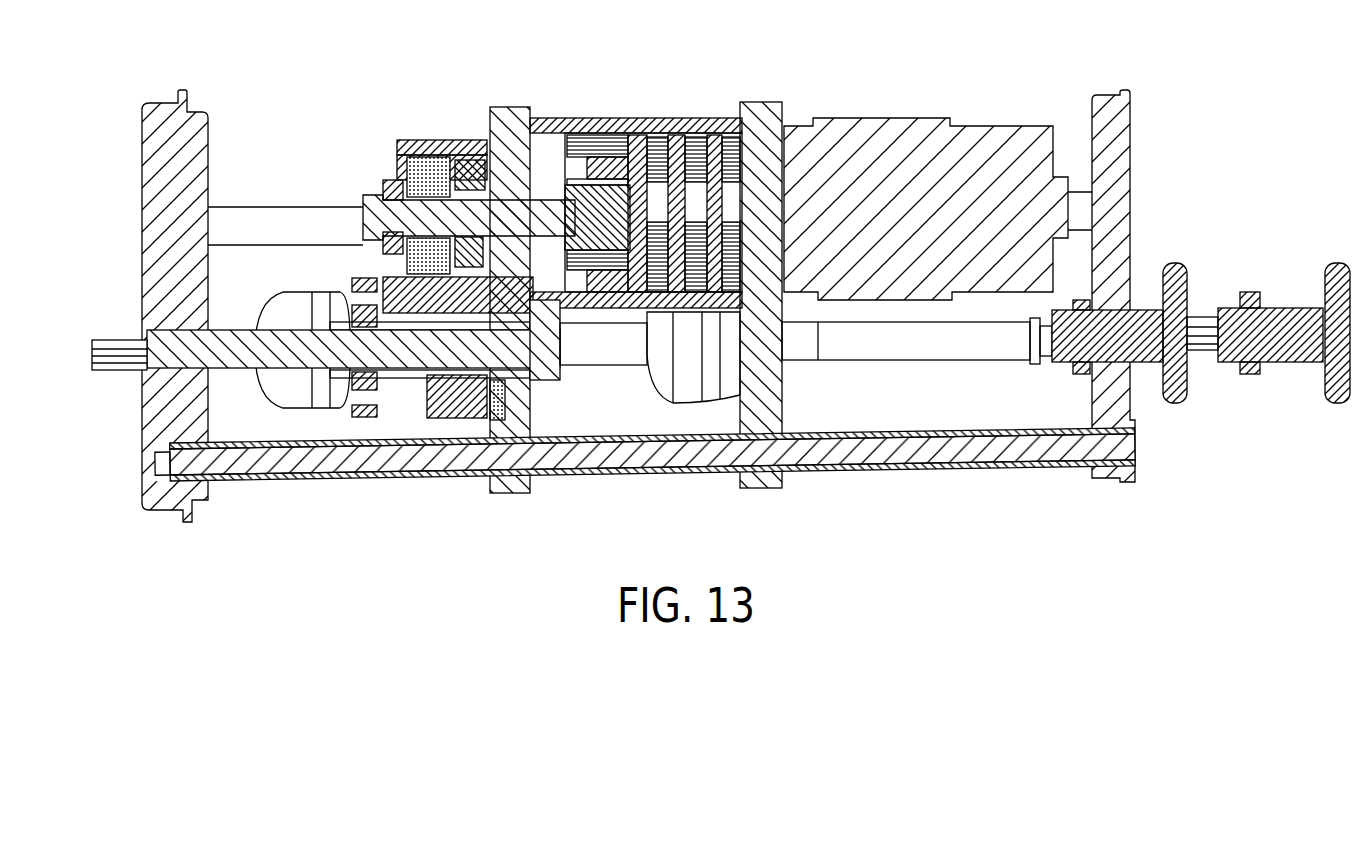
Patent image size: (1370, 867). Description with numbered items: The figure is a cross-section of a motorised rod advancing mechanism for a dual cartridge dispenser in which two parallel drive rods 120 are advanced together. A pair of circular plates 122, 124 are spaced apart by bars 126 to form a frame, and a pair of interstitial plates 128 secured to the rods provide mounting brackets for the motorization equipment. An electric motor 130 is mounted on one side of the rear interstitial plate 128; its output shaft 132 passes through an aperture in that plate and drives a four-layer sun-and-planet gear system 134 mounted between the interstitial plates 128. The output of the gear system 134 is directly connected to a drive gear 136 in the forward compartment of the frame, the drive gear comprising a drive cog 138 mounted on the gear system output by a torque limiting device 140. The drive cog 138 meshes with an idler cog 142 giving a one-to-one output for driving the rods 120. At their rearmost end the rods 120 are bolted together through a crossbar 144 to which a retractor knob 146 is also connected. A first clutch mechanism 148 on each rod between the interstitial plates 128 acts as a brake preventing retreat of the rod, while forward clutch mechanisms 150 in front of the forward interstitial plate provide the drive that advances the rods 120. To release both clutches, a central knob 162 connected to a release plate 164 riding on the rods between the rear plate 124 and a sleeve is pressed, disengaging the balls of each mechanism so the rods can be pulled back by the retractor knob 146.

The drive rod 120 is at (118, 352).
The circular plate 122 is at (156, 113).
The circular plate 124 is at (1110, 102).
The bar 126 is at (260, 223).
The interstitial plate 128 is at (520, 490).
The electric motor 130 is at (998, 140).
The output shaft 132 is at (737, 205).
The sun-and-planet gear system 134 is at (633, 140).
The drive gear 136 is at (440, 112).
The drive cog 138 is at (430, 150).
The torque limiting device 140 is at (403, 158).
The idler cog 142 is at (453, 403).
The crossbar 144 is at (1250, 297).
The retractor knob 146 is at (1320, 297).
The first clutch mechanism 148 is at (678, 393).
The clutch mechanism 150 is at (298, 300).
The central knob 162 is at (1170, 263).
The release plate 164 is at (1087, 372).